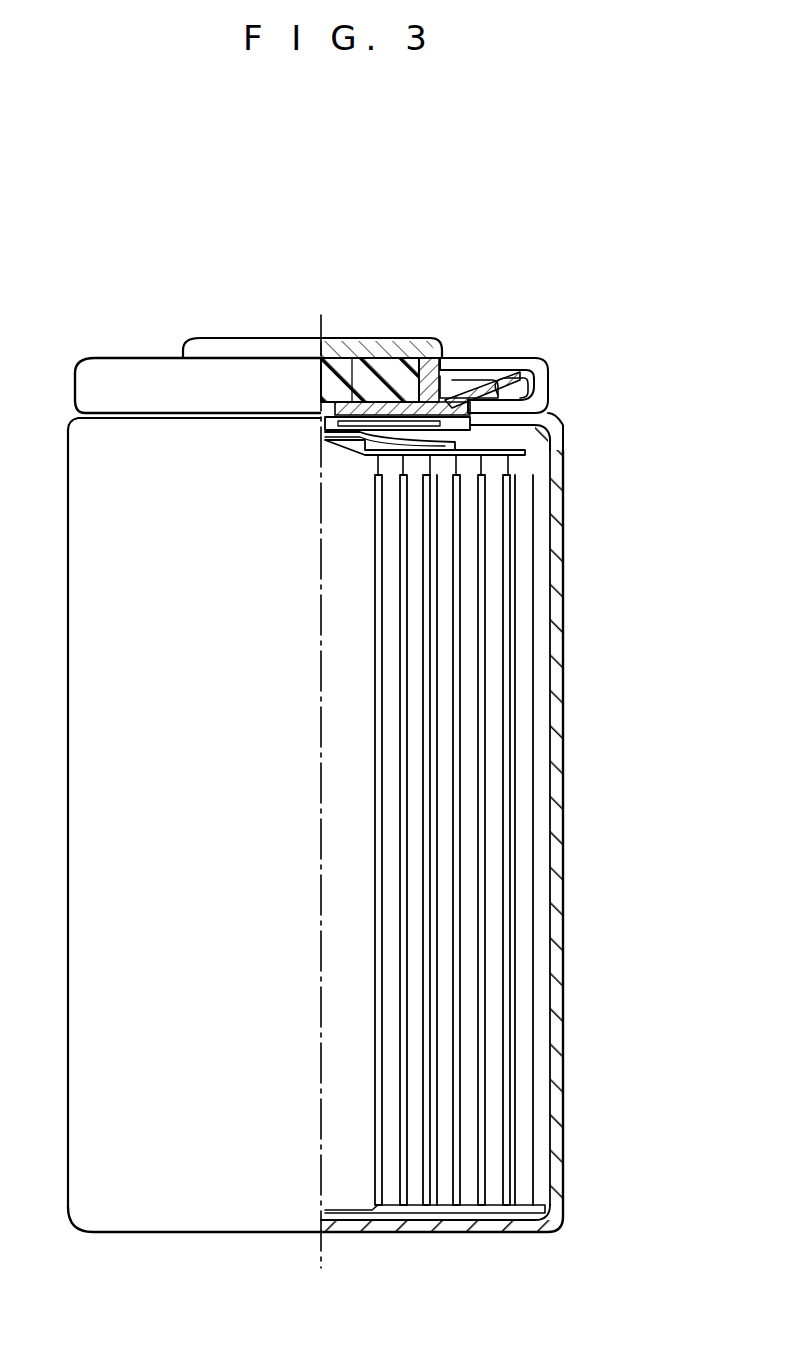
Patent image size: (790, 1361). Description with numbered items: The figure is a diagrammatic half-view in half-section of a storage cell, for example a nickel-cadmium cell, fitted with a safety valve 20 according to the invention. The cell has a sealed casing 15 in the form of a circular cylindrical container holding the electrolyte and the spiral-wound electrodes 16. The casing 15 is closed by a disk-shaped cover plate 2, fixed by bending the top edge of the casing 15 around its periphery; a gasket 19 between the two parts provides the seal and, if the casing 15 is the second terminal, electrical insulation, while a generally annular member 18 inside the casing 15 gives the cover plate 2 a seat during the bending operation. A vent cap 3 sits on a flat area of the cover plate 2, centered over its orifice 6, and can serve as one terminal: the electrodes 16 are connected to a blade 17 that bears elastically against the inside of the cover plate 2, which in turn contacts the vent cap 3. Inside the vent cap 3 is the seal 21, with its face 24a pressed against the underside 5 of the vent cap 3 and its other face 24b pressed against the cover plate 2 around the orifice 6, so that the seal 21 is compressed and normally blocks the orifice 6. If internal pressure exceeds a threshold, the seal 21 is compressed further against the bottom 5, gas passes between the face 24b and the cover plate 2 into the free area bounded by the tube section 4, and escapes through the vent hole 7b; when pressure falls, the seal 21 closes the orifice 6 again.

The cover plate 2 is at (500, 358).
The vent cap 3 is at (225, 337).
The tube section 4 is at (468, 358).
The underside of the vent cap 5 is at (400, 342).
The orifice 6 is at (318, 437).
The vent hole 7b is at (440, 340).
The casing 15 is at (563, 712).
The electrodes 16 is at (495, 852).
The blade 17 is at (480, 470).
The annular member 18 is at (556, 435).
The gasket 19 is at (548, 383).
The safety valve 20 is at (364, 322).
The seal 21 is at (330, 415).
The face of the seal 24a is at (360, 400).
The face of the seal 24b is at (363, 440).